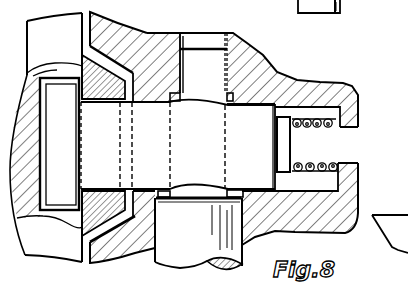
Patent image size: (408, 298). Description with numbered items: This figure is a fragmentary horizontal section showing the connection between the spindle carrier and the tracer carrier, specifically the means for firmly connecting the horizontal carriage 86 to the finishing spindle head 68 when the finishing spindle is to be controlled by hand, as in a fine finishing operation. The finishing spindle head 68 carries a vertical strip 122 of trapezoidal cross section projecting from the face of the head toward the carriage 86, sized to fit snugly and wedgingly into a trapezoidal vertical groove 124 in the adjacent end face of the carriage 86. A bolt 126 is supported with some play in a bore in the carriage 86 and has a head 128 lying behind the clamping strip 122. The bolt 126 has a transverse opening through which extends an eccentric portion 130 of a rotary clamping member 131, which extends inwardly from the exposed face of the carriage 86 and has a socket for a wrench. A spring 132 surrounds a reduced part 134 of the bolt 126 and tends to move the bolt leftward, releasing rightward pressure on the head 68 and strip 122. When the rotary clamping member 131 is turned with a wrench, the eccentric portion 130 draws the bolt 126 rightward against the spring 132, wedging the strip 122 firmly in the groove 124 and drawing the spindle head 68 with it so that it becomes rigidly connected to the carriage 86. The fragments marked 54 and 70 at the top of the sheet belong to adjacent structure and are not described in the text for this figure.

The finishing spindle head 68 is at (42, 30).
The horizontal carriage 86 is at (108, 35).
The trapezoidal vertical groove 124 is at (128, 90).
The vertical strip 122 is at (103, 207).
The head 128 is at (65, 185).
The bolt 126 is at (260, 117).
The eccentric portion 130 is at (183, 97).
The rotary clamping member 131 is at (170, 257).
The spring 132 is at (321, 127).
The reduced part 134 is at (358, 137).
The fragment 54 is at (301, 9).
The fragment 70 is at (341, 7).